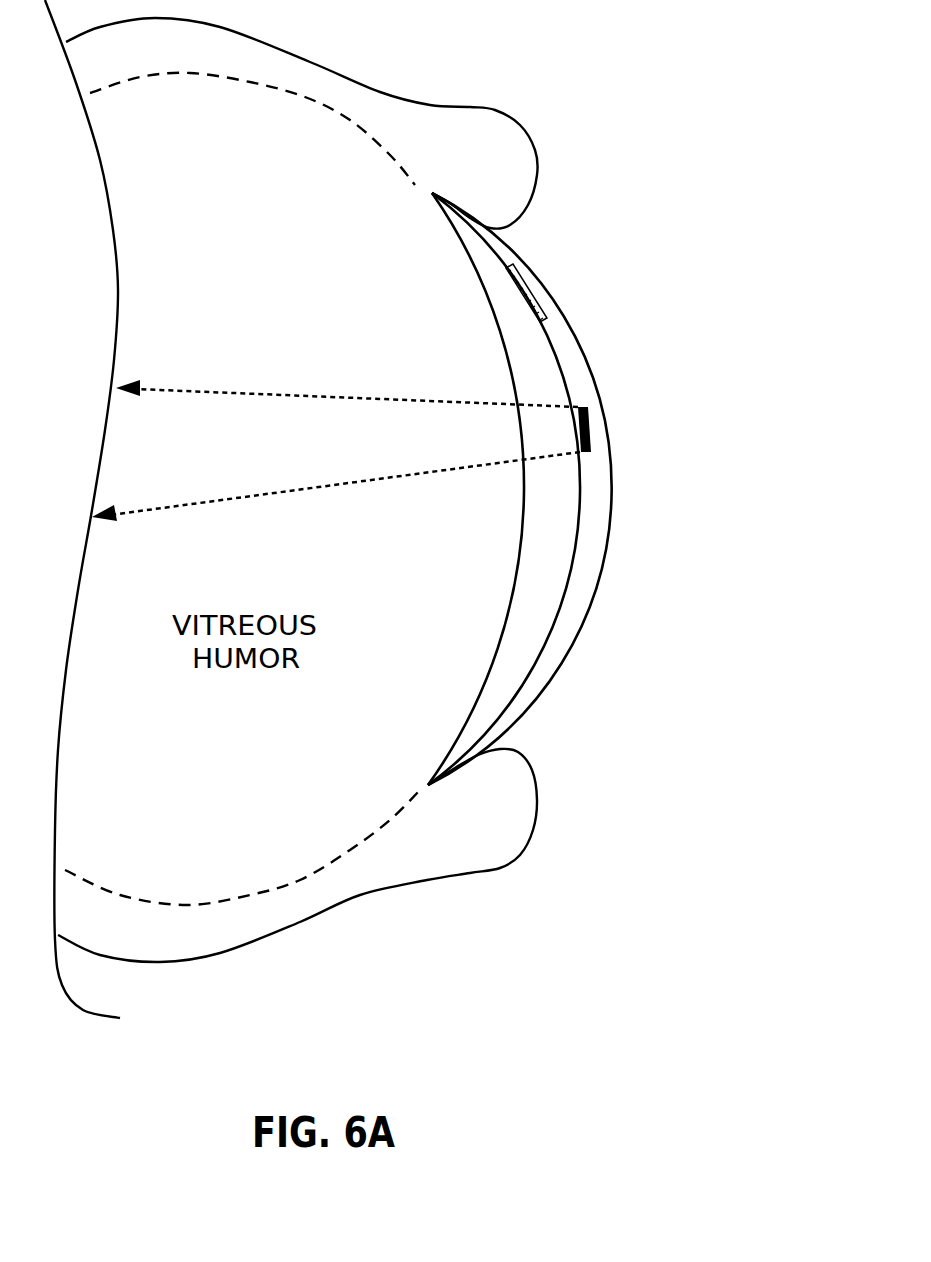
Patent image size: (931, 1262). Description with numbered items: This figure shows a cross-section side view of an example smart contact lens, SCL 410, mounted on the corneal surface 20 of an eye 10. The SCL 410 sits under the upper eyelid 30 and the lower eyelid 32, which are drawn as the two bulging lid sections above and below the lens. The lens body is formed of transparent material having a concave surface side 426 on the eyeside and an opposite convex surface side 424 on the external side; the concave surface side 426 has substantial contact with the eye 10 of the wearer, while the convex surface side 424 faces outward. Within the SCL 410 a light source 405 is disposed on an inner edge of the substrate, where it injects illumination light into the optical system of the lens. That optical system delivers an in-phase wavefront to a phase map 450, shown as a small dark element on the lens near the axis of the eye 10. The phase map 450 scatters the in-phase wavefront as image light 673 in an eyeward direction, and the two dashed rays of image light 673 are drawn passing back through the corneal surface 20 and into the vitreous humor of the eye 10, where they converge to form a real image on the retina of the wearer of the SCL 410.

The eye 10 is at (385, 930).
The upper eyelid 30 is at (533, 145).
The lower eyelid 32 is at (537, 793).
The corneal surface 20 is at (570, 535).
The SCL 410 is at (621, 489).
The convex surface side 424 is at (605, 405).
The concave surface side 426 is at (580, 455).
The light source 405 is at (533, 277).
The phase map 450 is at (590, 431).
The image light 673 is at (336, 450).